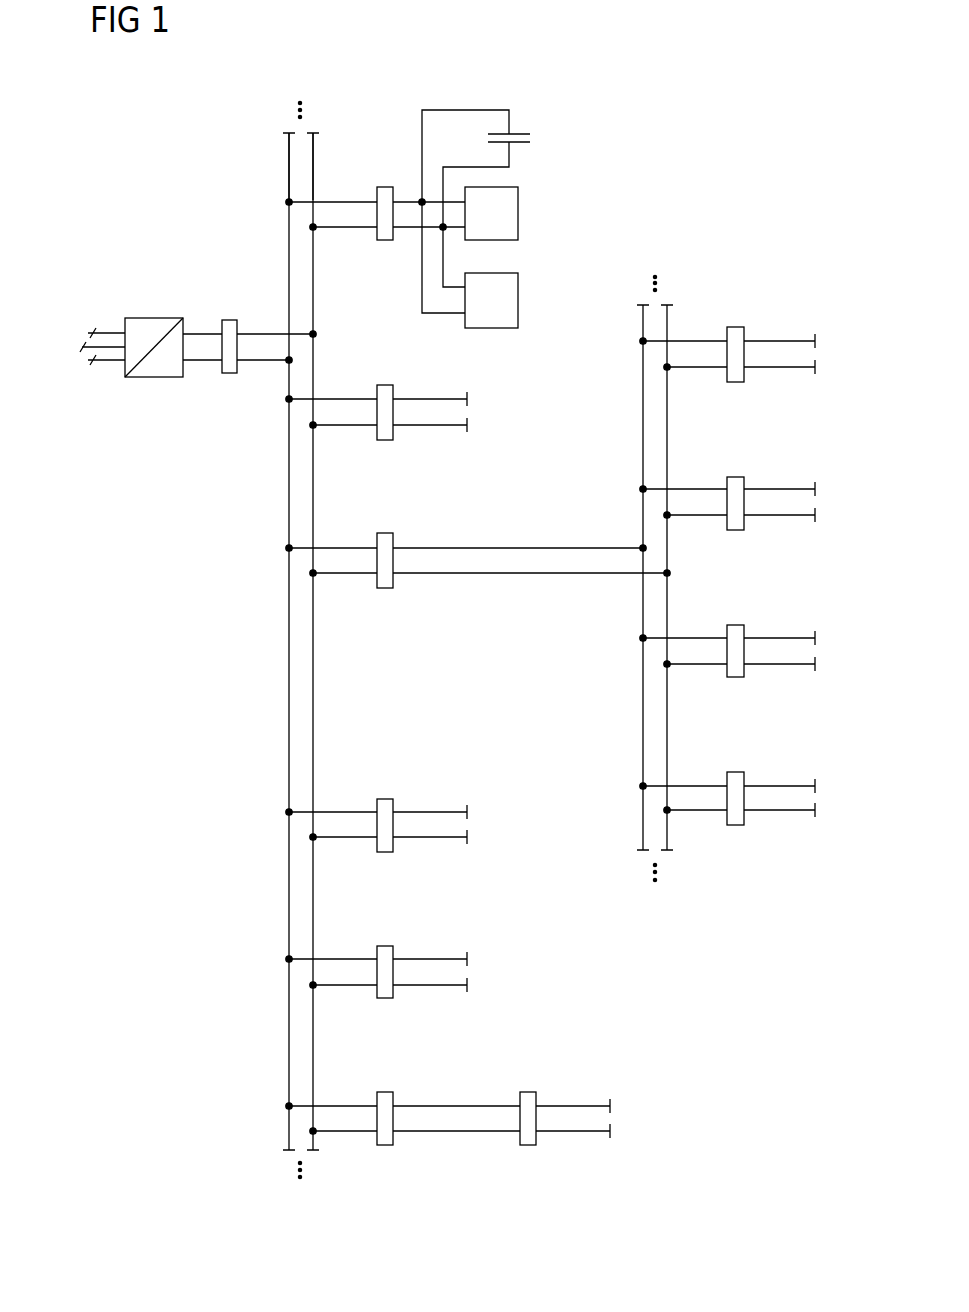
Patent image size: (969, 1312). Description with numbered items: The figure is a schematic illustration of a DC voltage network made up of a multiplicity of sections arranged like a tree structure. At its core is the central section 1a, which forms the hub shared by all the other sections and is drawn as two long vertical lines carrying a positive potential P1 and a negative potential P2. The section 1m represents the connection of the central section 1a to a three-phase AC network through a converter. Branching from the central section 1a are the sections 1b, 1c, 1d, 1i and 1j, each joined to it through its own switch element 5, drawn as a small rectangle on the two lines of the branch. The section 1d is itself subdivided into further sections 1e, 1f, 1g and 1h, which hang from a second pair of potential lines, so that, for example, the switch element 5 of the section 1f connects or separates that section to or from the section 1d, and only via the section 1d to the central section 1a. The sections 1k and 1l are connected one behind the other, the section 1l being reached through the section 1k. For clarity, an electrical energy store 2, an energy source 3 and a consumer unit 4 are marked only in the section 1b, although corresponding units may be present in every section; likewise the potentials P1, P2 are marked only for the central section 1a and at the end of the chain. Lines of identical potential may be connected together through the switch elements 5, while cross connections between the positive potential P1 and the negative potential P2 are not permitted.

The central section 1a is at (285, 104).
The section 1b is at (458, 92).
The section 1c is at (450, 385).
The section 1d is at (500, 532).
The section 1e is at (772, 324).
The section 1f is at (772, 472).
The section 1g is at (772, 622).
The section 1h is at (772, 770).
The section 1i is at (436, 797).
The section 1j is at (436, 944).
The section 1k is at (446, 1150).
The section 1l is at (563, 1150).
The section 1m is at (199, 303).
The electrical energy store 2 is at (522, 133).
The energy source 3 is at (518, 300).
The consumer unit 4 is at (518, 213).
The switch element 5 is at (385, 243).
The positive potential P1 is at (289, 163).
The negative potential P2 is at (313, 163).